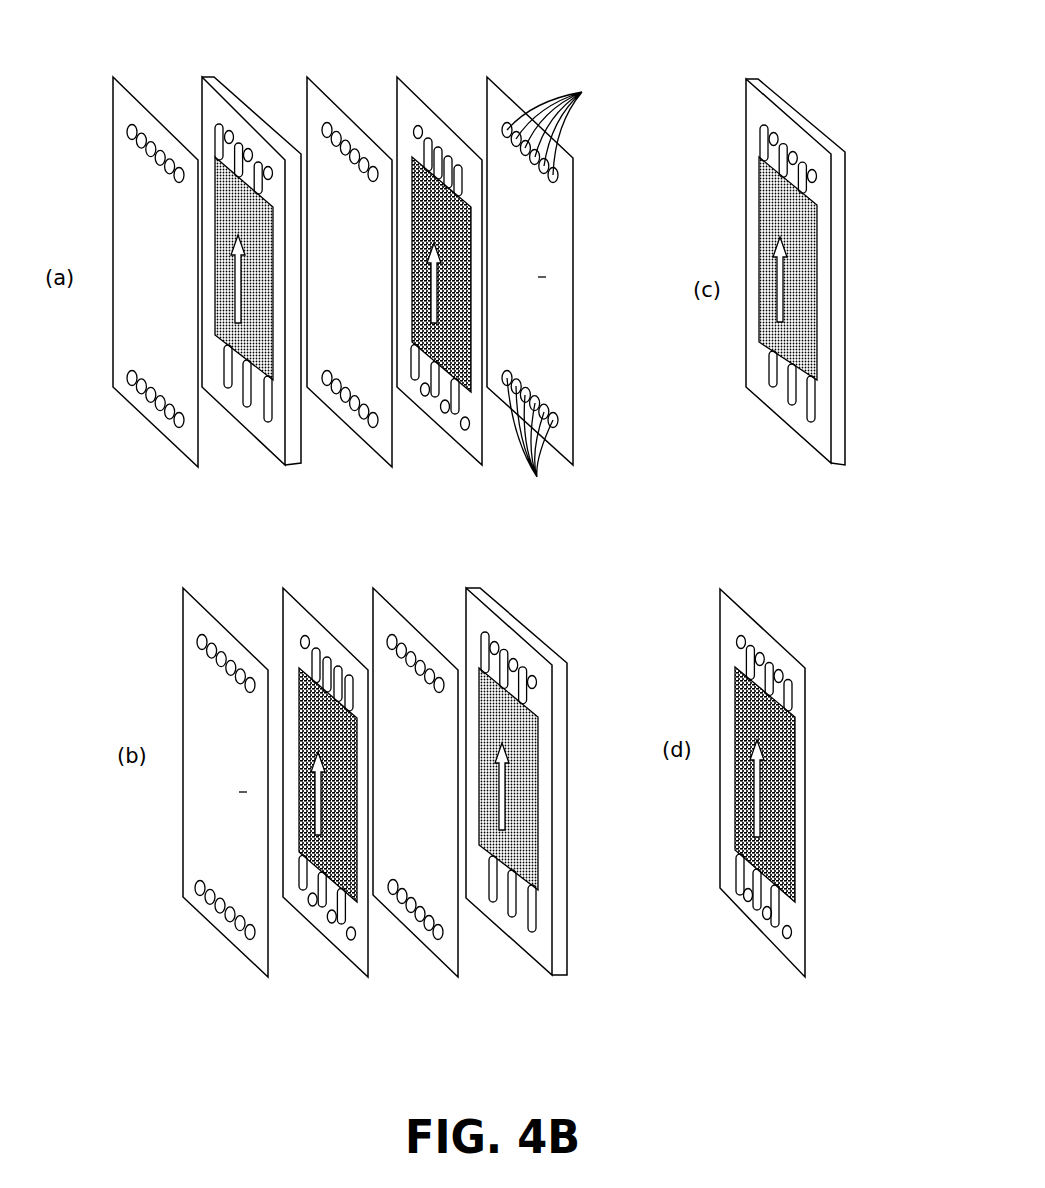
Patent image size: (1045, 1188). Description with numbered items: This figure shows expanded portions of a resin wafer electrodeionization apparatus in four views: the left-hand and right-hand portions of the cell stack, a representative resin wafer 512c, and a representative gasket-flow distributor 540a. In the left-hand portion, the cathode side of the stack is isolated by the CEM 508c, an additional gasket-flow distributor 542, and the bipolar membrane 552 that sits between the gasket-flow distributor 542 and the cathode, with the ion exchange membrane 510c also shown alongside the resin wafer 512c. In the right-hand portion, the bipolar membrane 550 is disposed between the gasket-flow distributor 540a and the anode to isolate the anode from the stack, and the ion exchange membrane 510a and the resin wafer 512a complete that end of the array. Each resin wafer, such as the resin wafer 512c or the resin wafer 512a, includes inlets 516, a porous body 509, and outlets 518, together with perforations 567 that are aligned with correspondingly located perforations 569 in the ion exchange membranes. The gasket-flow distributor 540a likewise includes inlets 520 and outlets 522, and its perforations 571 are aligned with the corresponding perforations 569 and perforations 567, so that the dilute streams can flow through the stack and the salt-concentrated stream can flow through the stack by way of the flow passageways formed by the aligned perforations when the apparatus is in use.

The ion exchange membrane 510c is at (183, 441).
The resin wafer 512c is at (280, 437).
The CEM 508c is at (385, 442).
The gasket-flow distributor 542 is at (473, 443).
The bipolar membrane 552 is at (560, 289).
The perforations 569 is at (594, 228).
The porous body 509 is at (800, 347).
The inlets 516 is at (769, 372).
The outlets 518 is at (765, 124).
The perforations 567 is at (774, 133).
The bipolar membrane 550 is at (263, 962).
The gasket-flow distributor 540a is at (360, 960).
The ion exchange membrane 510a is at (452, 963).
The resin wafer 512a is at (560, 962).
The inlets 520 is at (737, 890).
The perforations 571 is at (741, 635).
The outlets 522 is at (750, 645).